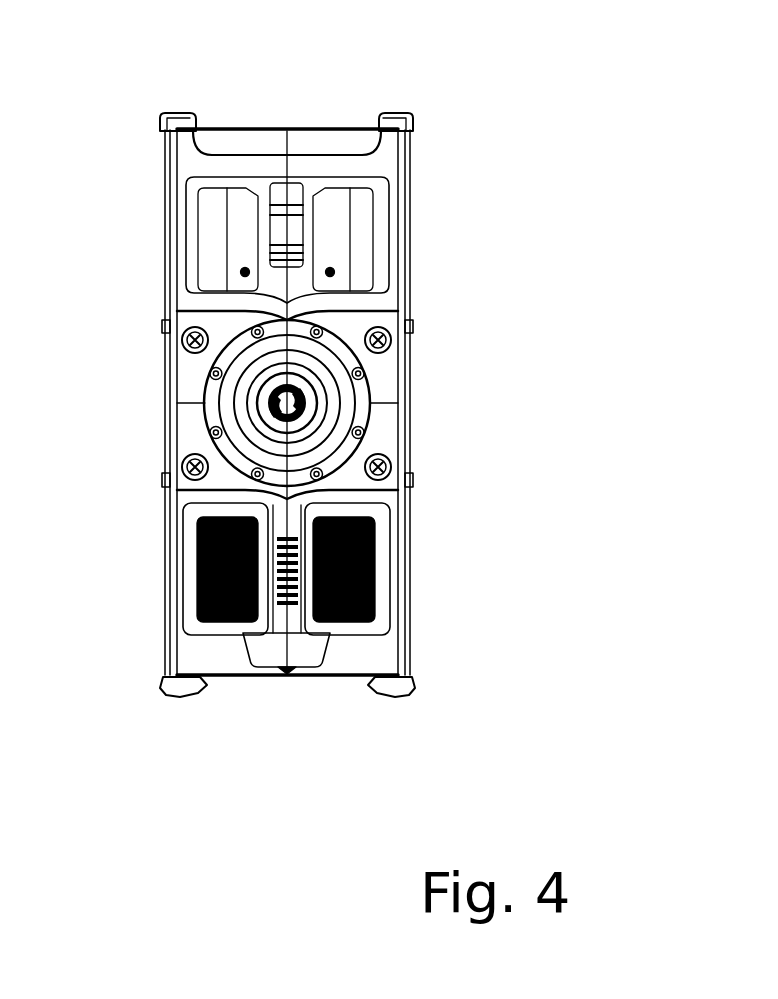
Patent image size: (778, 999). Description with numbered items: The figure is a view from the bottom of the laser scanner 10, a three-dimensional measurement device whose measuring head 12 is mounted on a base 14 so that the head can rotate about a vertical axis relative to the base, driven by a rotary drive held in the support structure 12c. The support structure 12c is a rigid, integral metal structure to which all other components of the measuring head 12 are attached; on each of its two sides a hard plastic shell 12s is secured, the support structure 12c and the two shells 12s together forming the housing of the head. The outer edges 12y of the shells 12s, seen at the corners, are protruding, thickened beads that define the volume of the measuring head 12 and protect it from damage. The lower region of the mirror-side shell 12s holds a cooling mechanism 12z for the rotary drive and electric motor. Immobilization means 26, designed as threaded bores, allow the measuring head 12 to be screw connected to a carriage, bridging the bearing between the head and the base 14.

The laser scanner 10 is at (513, 223).
The measuring head 12 is at (350, 679).
The shell 12s is at (413, 140).
The outer edges 12y is at (165, 128).
The support structure 12c is at (186, 423).
The cooling mechanism 12z is at (365, 572).
The base 14 is at (330, 424).
The immobilization means 26 is at (182, 333).